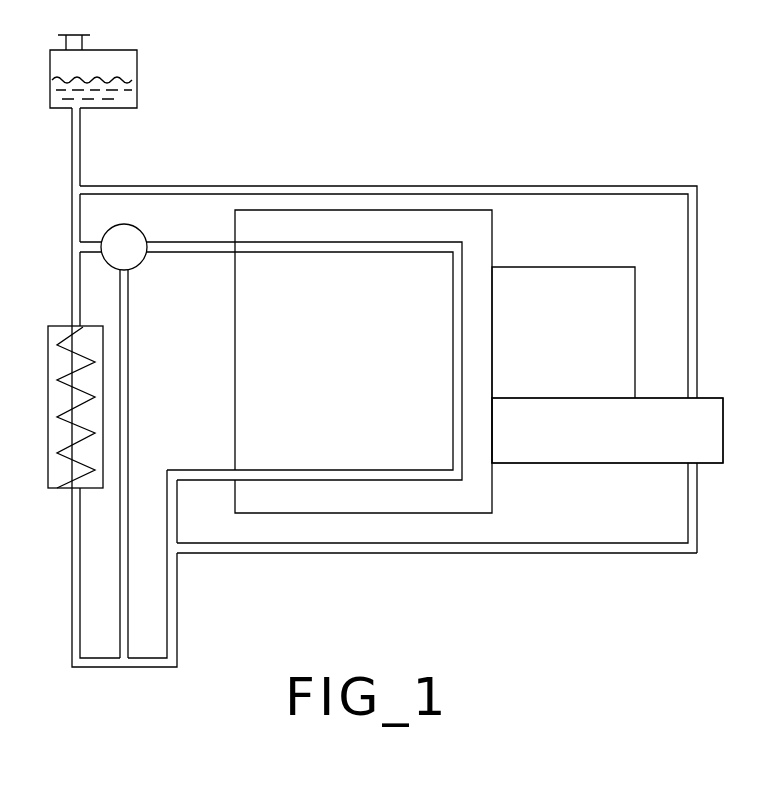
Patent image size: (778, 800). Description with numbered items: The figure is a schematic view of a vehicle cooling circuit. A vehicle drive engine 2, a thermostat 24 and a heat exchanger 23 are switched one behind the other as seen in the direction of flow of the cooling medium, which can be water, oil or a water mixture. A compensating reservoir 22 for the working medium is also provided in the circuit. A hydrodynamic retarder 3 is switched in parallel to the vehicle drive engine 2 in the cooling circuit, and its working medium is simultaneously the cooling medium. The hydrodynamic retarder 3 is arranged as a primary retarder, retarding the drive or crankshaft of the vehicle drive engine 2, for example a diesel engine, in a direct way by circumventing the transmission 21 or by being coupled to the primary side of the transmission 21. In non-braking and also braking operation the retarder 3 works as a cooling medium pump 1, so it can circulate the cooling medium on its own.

The cooling medium pump 1 is at (543, 447).
The vehicle drive engine 2 is at (361, 369).
The hydrodynamic retarder 3 is at (579, 447).
The transmission 21 is at (575, 343).
The compensating reservoir 22 is at (125, 63).
The heat exchanger 23 is at (60, 475).
The thermostat 24 is at (130, 237).